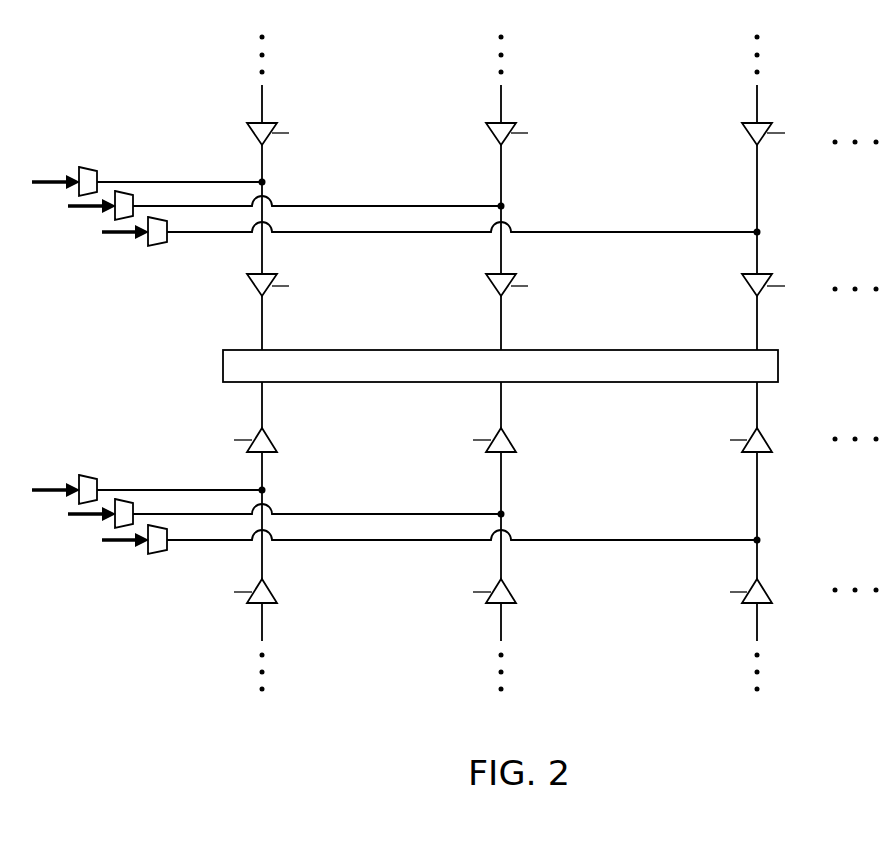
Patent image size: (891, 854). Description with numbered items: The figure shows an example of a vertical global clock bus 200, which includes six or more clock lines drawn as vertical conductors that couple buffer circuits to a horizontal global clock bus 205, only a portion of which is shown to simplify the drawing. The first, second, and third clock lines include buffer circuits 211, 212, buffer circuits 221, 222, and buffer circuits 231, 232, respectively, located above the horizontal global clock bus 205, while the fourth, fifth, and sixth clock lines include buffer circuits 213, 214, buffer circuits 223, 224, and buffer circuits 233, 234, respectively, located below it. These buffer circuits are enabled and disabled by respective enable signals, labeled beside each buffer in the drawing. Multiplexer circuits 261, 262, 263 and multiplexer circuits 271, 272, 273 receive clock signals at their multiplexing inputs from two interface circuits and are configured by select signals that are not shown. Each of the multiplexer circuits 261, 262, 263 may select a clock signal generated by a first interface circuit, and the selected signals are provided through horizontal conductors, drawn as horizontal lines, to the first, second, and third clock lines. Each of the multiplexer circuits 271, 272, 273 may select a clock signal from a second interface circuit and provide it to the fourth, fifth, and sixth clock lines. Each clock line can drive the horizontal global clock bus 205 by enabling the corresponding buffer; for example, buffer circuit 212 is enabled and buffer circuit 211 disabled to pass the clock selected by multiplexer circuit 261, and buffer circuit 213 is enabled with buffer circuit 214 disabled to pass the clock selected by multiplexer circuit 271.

The vertical global clock bus 200 is at (158, 62).
The horizontal global clock bus 205 is at (778, 370).
The buffer circuit 211 is at (268, 140).
The buffer circuit 212 is at (268, 291).
The buffer circuit 213 is at (256, 439).
The buffer circuit 214 is at (256, 591).
The buffer circuit 221 is at (507, 140).
The buffer circuit 222 is at (507, 291).
The buffer circuit 223 is at (495, 439).
The buffer circuit 224 is at (495, 591).
The buffer circuit 231 is at (763, 140).
The buffer circuit 232 is at (763, 291).
The buffer circuit 233 is at (751, 439).
The buffer circuit 234 is at (751, 591).
The multiplexer circuit 261 is at (88, 167).
The multiplexer circuit 262 is at (113, 214).
The multiplexer circuit 263 is at (161, 245).
The multiplexer circuit 271 is at (88, 475).
The multiplexer circuit 272 is at (113, 522).
The multiplexer circuit 273 is at (161, 553).